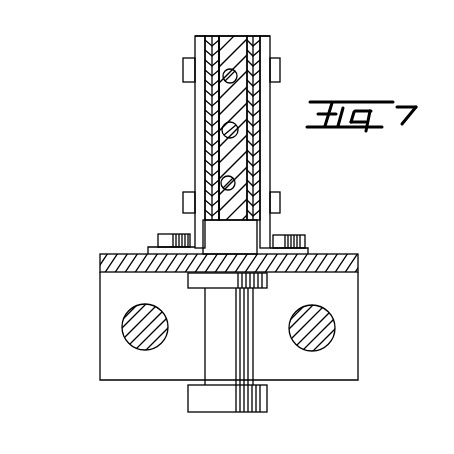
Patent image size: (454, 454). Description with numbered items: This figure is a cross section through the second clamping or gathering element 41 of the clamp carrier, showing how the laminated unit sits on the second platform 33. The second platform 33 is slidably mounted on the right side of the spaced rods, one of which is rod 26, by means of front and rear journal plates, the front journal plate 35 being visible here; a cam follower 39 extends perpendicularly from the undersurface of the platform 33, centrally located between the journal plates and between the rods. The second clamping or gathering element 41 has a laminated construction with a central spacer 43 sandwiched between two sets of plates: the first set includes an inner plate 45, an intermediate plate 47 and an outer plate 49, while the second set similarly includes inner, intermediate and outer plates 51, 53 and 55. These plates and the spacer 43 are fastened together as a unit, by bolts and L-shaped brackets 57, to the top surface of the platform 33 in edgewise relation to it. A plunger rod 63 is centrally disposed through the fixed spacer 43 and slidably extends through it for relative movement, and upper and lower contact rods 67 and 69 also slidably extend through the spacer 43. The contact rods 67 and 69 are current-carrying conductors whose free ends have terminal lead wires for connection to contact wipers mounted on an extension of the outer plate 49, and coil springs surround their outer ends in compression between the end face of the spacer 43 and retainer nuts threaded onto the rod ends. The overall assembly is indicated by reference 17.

The laminated assembly 17 is at (268, 36).
The rod 26 is at (132, 320).
The second platform 33 is at (355, 256).
The front journal plate 35 is at (348, 320).
The cam follower 39 is at (190, 398).
The second clamping or gathering element 41 is at (271, 172).
The central spacer 43 is at (228, 162).
The inner plate 45 is at (218, 118).
The intermediate plate 47 is at (212, 38).
The outer plate 49 is at (208, 80).
The inner plate 51 is at (244, 142).
The intermediate plate 53 is at (256, 38).
The outer plate 55 is at (258, 45).
The L-shaped bracket 57 is at (198, 228).
The plunger rod 63 is at (236, 128).
The upper contact rod 67 is at (230, 69).
The lower contact rod 69 is at (230, 237).